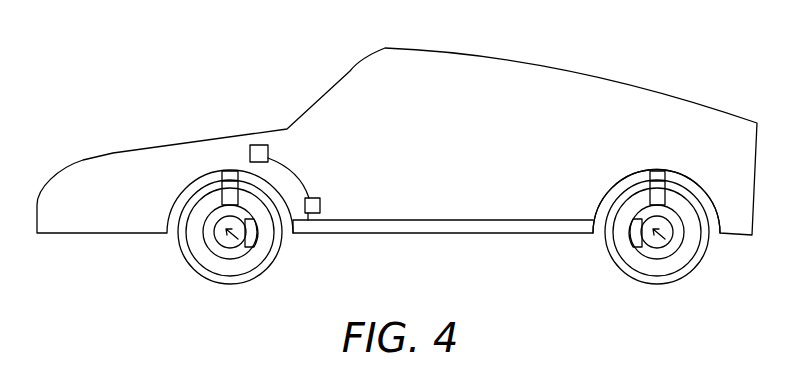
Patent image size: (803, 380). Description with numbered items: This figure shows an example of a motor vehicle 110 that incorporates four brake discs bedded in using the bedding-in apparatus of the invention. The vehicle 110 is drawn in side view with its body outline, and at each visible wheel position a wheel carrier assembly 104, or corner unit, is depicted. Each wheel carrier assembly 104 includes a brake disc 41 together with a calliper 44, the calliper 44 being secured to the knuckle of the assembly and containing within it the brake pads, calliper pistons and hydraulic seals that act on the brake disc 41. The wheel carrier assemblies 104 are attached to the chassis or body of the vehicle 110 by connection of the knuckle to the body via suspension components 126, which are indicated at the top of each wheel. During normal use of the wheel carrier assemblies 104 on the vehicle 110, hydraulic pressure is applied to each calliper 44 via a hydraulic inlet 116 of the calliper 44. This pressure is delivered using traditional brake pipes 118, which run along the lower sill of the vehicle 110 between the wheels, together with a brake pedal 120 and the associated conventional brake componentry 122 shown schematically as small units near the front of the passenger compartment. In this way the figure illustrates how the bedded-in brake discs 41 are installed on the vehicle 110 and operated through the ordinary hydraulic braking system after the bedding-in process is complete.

The vehicle 110 is at (575, 78).
The hydraulic inlet 116 is at (607, 200).
The brake pipes 118 is at (443, 233).
The brake pedal 120 is at (333, 187).
The brake componentry 122 is at (258, 145).
The suspension components 126 is at (222, 172).
The wheel carrier assembly 104 is at (193, 258).
The calliper 44 is at (273, 260).
The brake disc 41 is at (231, 257).